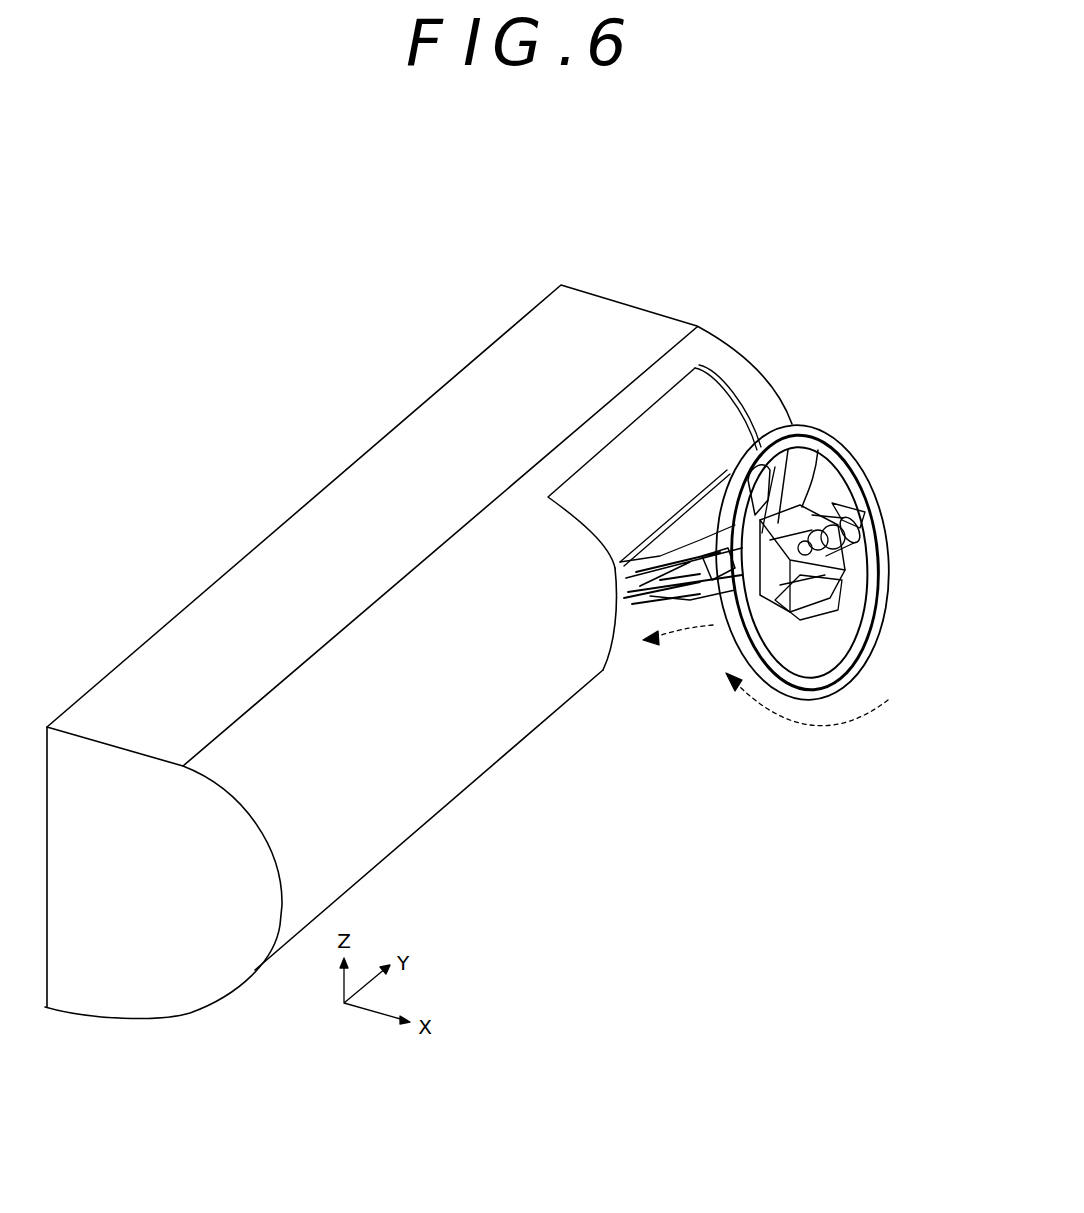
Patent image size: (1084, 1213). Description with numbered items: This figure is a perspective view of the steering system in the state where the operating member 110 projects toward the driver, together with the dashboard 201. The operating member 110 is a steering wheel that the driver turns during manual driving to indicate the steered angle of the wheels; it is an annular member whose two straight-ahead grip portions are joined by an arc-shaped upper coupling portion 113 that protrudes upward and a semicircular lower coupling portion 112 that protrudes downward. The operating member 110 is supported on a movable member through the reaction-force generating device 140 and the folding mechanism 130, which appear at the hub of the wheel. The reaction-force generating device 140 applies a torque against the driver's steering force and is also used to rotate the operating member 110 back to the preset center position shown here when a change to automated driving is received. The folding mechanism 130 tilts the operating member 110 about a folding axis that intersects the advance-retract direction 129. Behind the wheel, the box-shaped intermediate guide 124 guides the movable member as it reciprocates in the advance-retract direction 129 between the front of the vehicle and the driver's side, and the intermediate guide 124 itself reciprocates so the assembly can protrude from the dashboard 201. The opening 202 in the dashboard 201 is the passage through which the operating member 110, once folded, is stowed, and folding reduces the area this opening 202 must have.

The dashboard 201 is at (612, 325).
The opening 202 is at (628, 632).
The upper coupling portion 113 is at (765, 437).
The operating member 110 is at (805, 422).
The lower coupling portion 112 is at (817, 696).
The intermediate guide 124 is at (622, 583).
The reaction-force generating device 140 is at (815, 516).
The folding mechanism 130 is at (837, 552).
The advance-retract direction 129 is at (689, 637).